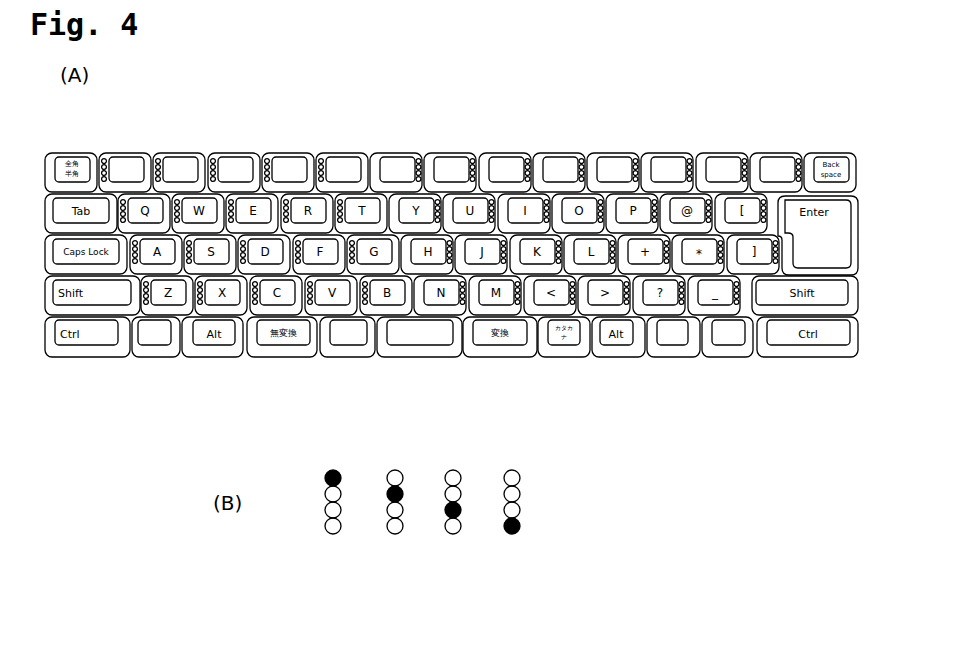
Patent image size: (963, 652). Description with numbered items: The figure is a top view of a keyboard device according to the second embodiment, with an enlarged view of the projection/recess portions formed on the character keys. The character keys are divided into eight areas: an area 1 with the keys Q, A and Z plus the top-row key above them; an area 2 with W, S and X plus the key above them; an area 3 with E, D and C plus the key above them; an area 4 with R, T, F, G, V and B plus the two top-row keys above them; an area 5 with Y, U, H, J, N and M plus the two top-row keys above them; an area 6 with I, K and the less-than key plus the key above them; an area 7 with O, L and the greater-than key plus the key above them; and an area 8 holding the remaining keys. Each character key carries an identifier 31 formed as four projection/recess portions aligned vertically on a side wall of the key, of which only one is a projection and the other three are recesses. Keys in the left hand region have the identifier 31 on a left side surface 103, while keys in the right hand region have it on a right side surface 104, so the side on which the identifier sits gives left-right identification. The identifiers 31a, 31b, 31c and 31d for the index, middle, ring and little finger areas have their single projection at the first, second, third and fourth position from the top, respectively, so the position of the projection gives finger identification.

The area 1 is at (150, 150).
The area 2 is at (204, 150).
The area 3 is at (258, 150).
The area 4 is at (370, 147).
The area 5 is at (475, 150).
The area 6 is at (530, 150).
The area 7 is at (585, 150).
The area 8 is at (590, 149).
The identifier 31 is at (565, 555).
The identifier 31a is at (150, 305).
The identifier 31b is at (203, 305).
The identifier 31c is at (258, 305).
The identifier 31d is at (313, 305).
The left side surface 103 is at (382, 337).
The right side surface 104 is at (458, 340).